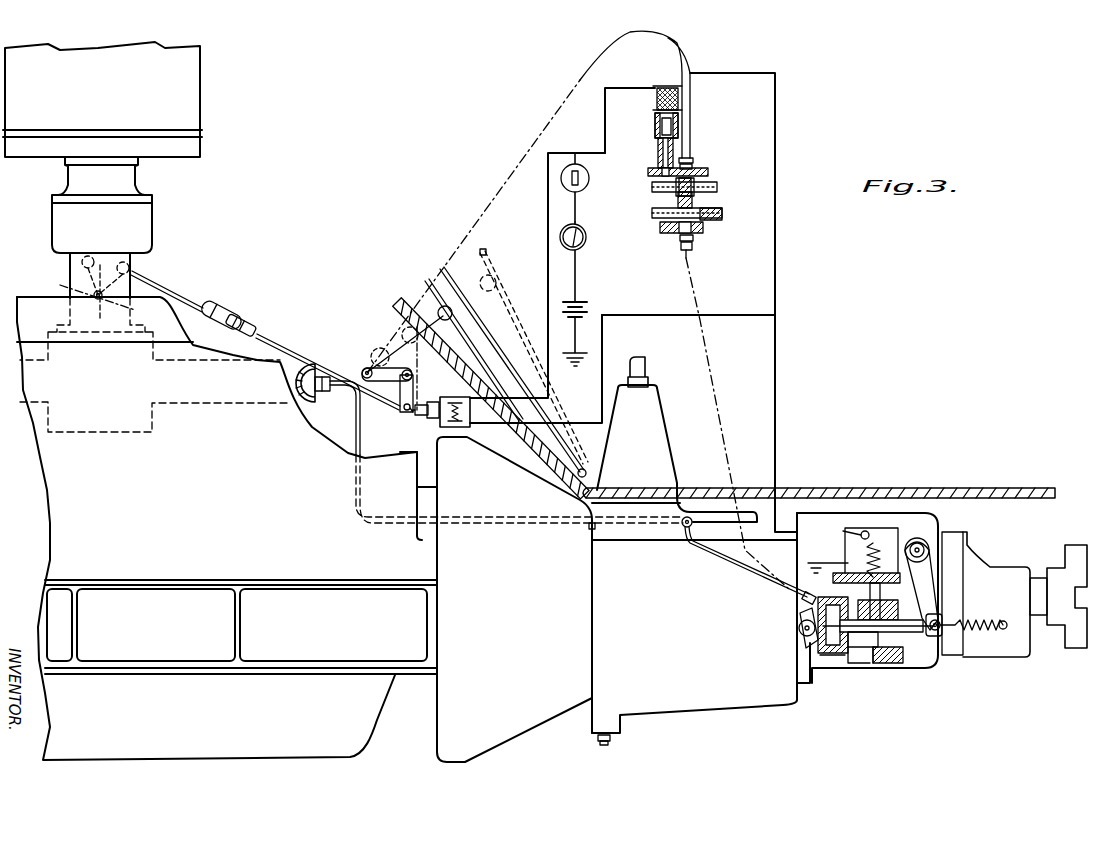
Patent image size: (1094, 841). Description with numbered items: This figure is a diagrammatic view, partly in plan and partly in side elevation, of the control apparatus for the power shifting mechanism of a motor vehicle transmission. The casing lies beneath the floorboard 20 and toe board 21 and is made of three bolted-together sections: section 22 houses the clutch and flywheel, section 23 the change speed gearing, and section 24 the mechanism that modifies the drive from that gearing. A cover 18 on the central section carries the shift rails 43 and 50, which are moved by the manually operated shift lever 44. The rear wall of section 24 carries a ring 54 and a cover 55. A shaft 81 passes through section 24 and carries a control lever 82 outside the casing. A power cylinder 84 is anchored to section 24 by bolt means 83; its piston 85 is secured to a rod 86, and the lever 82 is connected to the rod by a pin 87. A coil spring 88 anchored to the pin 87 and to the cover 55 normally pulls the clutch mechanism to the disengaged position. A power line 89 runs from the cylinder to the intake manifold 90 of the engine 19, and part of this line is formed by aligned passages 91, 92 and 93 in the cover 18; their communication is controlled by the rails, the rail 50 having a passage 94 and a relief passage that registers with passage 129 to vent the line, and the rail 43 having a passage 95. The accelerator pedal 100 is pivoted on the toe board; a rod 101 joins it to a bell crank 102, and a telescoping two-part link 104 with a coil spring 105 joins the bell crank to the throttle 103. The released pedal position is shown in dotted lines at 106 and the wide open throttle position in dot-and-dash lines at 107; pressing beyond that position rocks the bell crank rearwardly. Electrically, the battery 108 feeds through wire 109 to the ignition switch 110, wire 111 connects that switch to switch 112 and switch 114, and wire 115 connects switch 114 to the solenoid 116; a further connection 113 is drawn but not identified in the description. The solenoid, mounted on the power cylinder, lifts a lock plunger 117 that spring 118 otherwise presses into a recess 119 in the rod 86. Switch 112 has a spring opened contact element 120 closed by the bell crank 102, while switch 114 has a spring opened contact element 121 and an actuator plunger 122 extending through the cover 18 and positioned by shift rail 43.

The cover portion 18 is at (642, 540).
The engine 19 is at (273, 345).
The floorboard 20 is at (812, 488).
The toe board 21 is at (522, 440).
The casing section 22 is at (546, 723).
The casing section 23 is at (706, 705).
The casing section 24 is at (908, 668).
The shift rail 43 is at (716, 190).
The shift lever 44 is at (646, 372).
The shift rail 50 is at (716, 217).
The ring 54 is at (968, 544).
The cover 55 is at (998, 571).
The shaft 81 is at (926, 546).
The control lever 82 is at (927, 586).
The bolt means 83 is at (798, 628).
The power cylinder 84 is at (850, 672).
The piston 85 is at (824, 670).
The rod 86 is at (930, 634).
The pin 87 is at (937, 620).
The coil spring 88 is at (975, 623).
The power line 89 is at (692, 130).
The intake manifold 90 is at (312, 399).
The passage 91 is at (670, 235).
The passage 92 is at (700, 208).
The passage 93 is at (693, 164).
The passage 94 is at (697, 236).
The passage 95 is at (697, 183).
The accelerator pedal 100 is at (437, 303).
The rod 101 is at (370, 325).
The bell crank 102 is at (362, 366).
The throttle 103 is at (62, 283).
The two-part link 104 is at (185, 297).
The coil spring 105 is at (240, 312).
The released position 106 is at (486, 253).
The wide open throttle position 107 is at (447, 268).
The battery 108 is at (588, 311).
The wire 109 is at (574, 283).
The ignition switch 110 is at (575, 163).
The wire 111 is at (547, 218).
The switch 112 is at (442, 397).
The wire 113 is at (603, 347).
The switch 114 is at (655, 100).
The wire 115 is at (776, 212).
The solenoid 116 is at (858, 530).
The lock plunger 117 is at (846, 600).
The coil spring 118 is at (856, 565).
The recess 119 is at (871, 670).
The contact element 120 is at (421, 405).
The contact element 121 is at (655, 130).
The actuator plunger 122 is at (656, 166).
The passage 129 is at (672, 194).